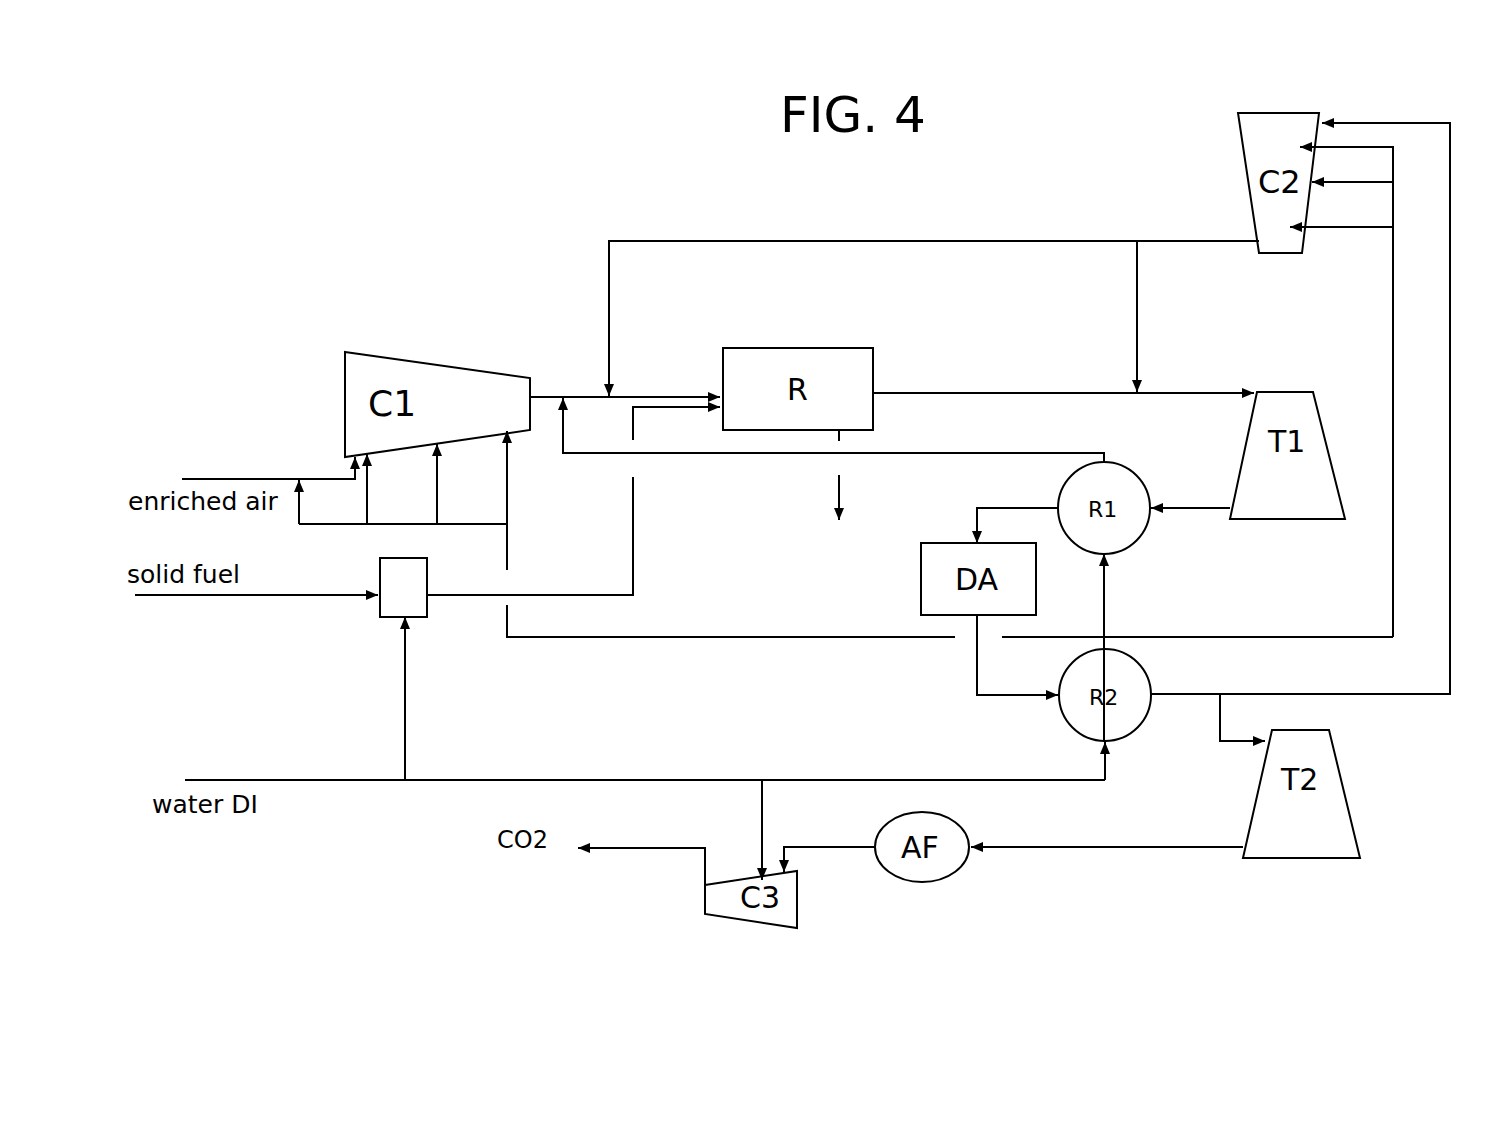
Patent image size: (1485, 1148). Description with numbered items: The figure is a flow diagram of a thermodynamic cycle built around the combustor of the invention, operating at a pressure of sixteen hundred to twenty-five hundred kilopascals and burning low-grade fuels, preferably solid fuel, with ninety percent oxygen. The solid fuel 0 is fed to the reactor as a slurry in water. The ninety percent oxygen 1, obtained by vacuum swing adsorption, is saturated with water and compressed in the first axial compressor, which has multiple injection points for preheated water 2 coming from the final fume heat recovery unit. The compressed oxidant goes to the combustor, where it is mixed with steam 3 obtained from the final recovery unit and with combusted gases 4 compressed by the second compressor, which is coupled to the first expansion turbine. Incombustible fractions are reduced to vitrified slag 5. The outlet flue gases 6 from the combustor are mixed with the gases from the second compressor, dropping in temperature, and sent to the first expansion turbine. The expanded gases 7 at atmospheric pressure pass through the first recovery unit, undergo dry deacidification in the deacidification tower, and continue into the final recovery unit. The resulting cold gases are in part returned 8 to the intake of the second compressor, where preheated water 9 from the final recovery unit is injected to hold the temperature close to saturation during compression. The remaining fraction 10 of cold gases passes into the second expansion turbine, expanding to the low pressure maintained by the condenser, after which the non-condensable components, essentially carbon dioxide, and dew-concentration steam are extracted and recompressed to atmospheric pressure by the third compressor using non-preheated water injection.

The solid fuel 0 is at (256, 609).
The 90% oxygen 1 is at (344, 477).
The preheated water 2 is at (950, 580).
The steam 3 is at (833, 443).
The combusted gases 4 is at (934, 301).
The vitrified slag 5 is at (817, 475).
The outlet flue gases 6 is at (1063, 376).
The expanded gases 7 is at (1190, 490).
The returned cold gases 8 is at (1300, 408).
The preheated water 9 is at (1341, 392).
The remaining fraction of cold gases 10 is at (1220, 717).